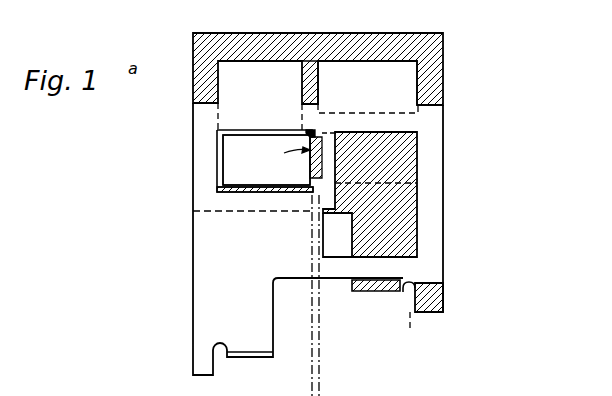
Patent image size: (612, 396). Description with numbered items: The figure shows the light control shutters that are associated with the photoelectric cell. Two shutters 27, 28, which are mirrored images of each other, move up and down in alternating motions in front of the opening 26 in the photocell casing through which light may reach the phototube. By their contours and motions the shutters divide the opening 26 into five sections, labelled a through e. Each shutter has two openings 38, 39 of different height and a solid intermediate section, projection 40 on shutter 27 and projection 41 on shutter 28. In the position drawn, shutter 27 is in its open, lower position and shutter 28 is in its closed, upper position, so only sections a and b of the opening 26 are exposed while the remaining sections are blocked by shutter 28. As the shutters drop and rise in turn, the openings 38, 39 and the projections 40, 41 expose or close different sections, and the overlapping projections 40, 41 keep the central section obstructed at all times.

The opening 26 is at (220, 165).
The shutter 27 is at (192, 303).
The shutter 28 is at (443, 41).
The opening 38 is at (417, 189).
The opening 39 is at (403, 88).
The projection 40 is at (315, 193).
The projection 41 is at (302, 82).